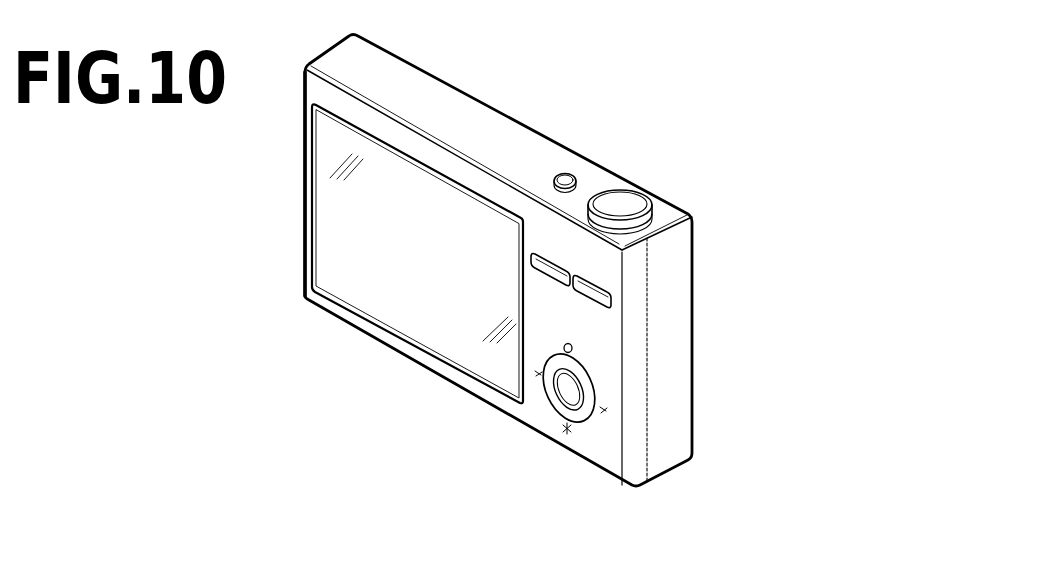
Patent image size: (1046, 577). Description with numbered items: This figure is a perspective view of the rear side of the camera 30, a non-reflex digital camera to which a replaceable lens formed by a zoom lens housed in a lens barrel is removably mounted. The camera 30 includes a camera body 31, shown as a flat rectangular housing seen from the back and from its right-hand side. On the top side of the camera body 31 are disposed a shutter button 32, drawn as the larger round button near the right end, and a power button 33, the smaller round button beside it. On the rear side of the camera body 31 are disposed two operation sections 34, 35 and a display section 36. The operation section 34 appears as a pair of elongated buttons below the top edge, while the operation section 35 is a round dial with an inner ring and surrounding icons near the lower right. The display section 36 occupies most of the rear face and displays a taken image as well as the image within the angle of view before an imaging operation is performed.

The camera 30 is at (252, 175).
The camera body 31 is at (681, 370).
The shutter button 32 is at (623, 205).
The power button 33 is at (566, 178).
The operation section 34 is at (606, 305).
The operation section 35 is at (580, 414).
The display section 36 is at (400, 323).